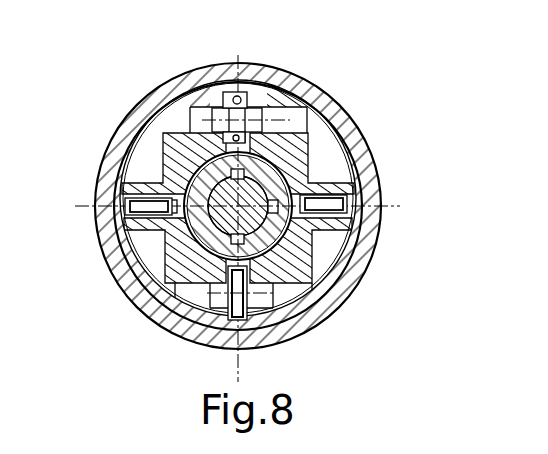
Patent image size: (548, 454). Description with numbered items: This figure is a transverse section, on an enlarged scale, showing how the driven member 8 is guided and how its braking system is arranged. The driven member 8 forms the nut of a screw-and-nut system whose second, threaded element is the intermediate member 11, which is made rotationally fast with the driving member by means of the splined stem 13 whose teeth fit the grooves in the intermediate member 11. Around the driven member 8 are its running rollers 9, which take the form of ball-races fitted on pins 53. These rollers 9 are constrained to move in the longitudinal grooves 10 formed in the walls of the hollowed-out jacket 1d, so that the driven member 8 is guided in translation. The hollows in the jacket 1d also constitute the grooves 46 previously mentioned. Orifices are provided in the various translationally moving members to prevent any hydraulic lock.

The hollowed-out jacket 1d is at (262, 88).
The driven member 8 is at (180, 162).
The running rollers 9 is at (140, 193).
The longitudinal grooves 10 is at (118, 205).
The intermediate member 11 is at (320, 234).
The splined stem 13 is at (165, 220).
The grooves 46 is at (183, 108).
The pins 53 is at (270, 97).